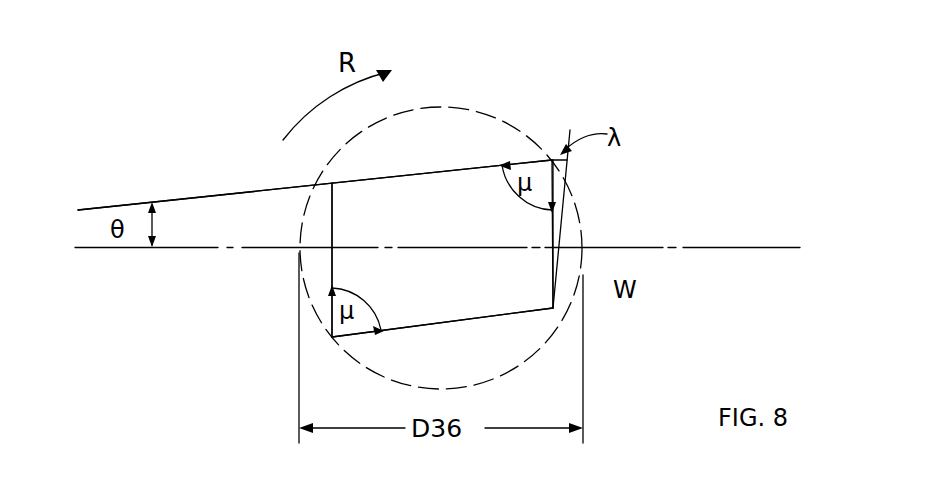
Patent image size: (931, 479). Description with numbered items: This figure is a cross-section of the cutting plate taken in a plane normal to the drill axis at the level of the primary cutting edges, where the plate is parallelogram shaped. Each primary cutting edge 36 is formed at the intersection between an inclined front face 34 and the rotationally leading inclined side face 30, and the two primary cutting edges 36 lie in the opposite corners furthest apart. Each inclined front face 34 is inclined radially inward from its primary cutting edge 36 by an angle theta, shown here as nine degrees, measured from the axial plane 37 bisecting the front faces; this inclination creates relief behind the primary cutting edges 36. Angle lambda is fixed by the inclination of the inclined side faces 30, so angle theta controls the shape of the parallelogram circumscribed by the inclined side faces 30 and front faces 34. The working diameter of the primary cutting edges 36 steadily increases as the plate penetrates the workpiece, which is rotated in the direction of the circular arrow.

The inclined side face 30 is at (333, 272).
The inclined front face 34 is at (475, 166).
The primary cutting edge 36 is at (332, 337).
The axial plane 37 is at (762, 248).